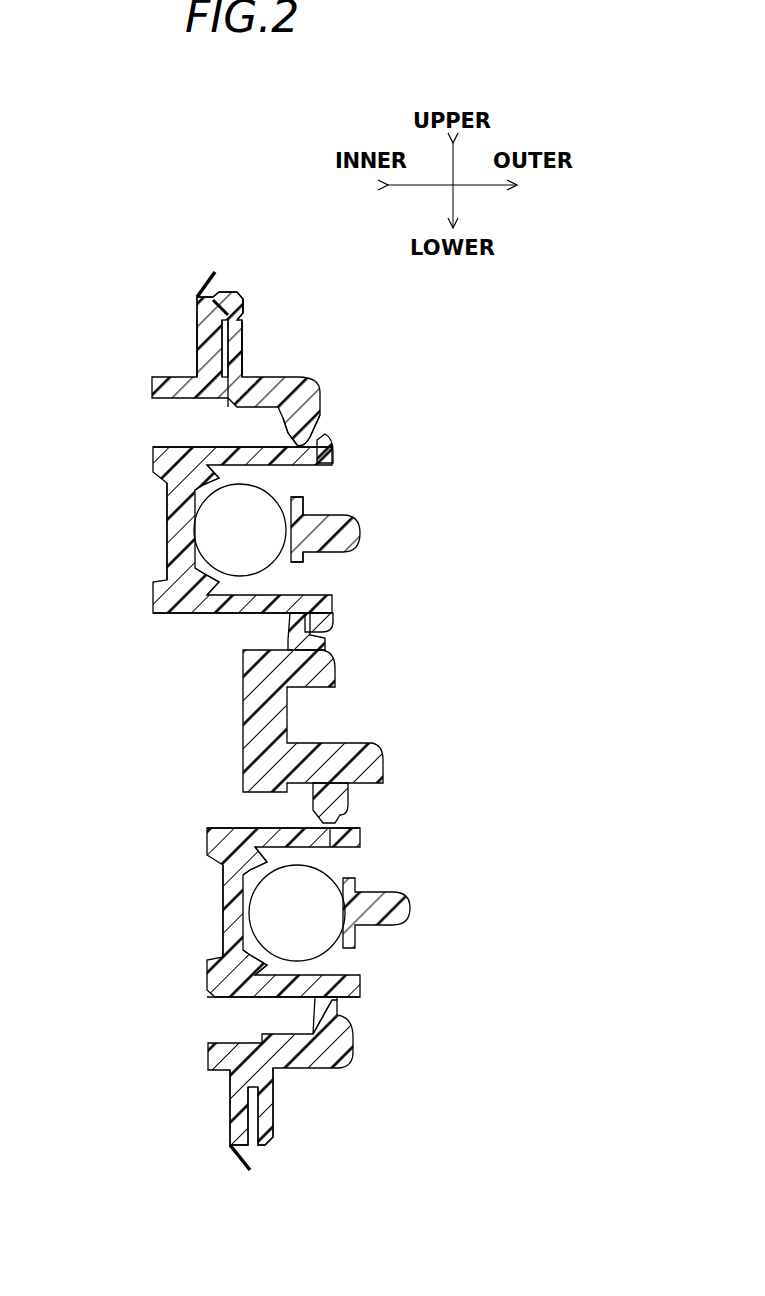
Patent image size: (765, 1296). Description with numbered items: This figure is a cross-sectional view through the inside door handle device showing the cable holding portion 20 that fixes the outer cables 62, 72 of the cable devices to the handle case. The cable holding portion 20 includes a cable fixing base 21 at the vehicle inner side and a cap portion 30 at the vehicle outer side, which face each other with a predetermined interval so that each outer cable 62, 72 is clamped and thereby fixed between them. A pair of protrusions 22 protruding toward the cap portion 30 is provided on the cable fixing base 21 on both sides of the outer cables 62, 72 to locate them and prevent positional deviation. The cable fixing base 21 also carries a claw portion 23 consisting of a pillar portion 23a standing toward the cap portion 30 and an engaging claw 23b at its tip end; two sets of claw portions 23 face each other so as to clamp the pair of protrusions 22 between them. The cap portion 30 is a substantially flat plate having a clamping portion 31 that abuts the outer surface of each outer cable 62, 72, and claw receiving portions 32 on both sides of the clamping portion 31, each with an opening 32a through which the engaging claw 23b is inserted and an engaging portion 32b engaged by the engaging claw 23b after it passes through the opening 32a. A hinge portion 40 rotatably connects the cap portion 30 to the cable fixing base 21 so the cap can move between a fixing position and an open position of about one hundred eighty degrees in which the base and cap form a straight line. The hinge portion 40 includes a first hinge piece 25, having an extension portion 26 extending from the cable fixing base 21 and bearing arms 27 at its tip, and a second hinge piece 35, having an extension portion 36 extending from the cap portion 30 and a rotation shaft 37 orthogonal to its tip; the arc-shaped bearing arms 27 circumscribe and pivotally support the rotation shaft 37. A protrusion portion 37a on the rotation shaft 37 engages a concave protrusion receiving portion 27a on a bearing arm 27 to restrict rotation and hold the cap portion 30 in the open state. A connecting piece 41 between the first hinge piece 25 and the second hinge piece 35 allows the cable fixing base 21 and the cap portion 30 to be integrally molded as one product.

The cable holding portion 20 is at (130, 490).
The cable fixing base 21 is at (167, 517).
The protrusion 22 is at (215, 450).
The claw portion 23 is at (350, 835).
The pillar portion 23a is at (230, 443).
The engaging claw 23b is at (308, 440).
The first hinge piece 25 is at (162, 320).
The extension portion 26 is at (197, 353).
The bearing arm 27 is at (195, 302).
The protrusion receiving portion 27a is at (213, 307).
The cap portion 30 is at (388, 525).
The clamping portion 31 is at (286, 530).
The claw receiving portion 32 is at (345, 815).
The opening 32a is at (305, 497).
The engaging portion 32b is at (333, 450).
The second hinge piece 35 is at (270, 320).
The extension portion 36 is at (242, 360).
The rotation shaft 37 is at (235, 295).
The protrusion portion 37a is at (243, 308).
The hinge portion 40 is at (213, 240).
The connecting piece 41 is at (207, 278).
The outer cable 62 is at (178, 572).
The outer cable 72 is at (222, 870).